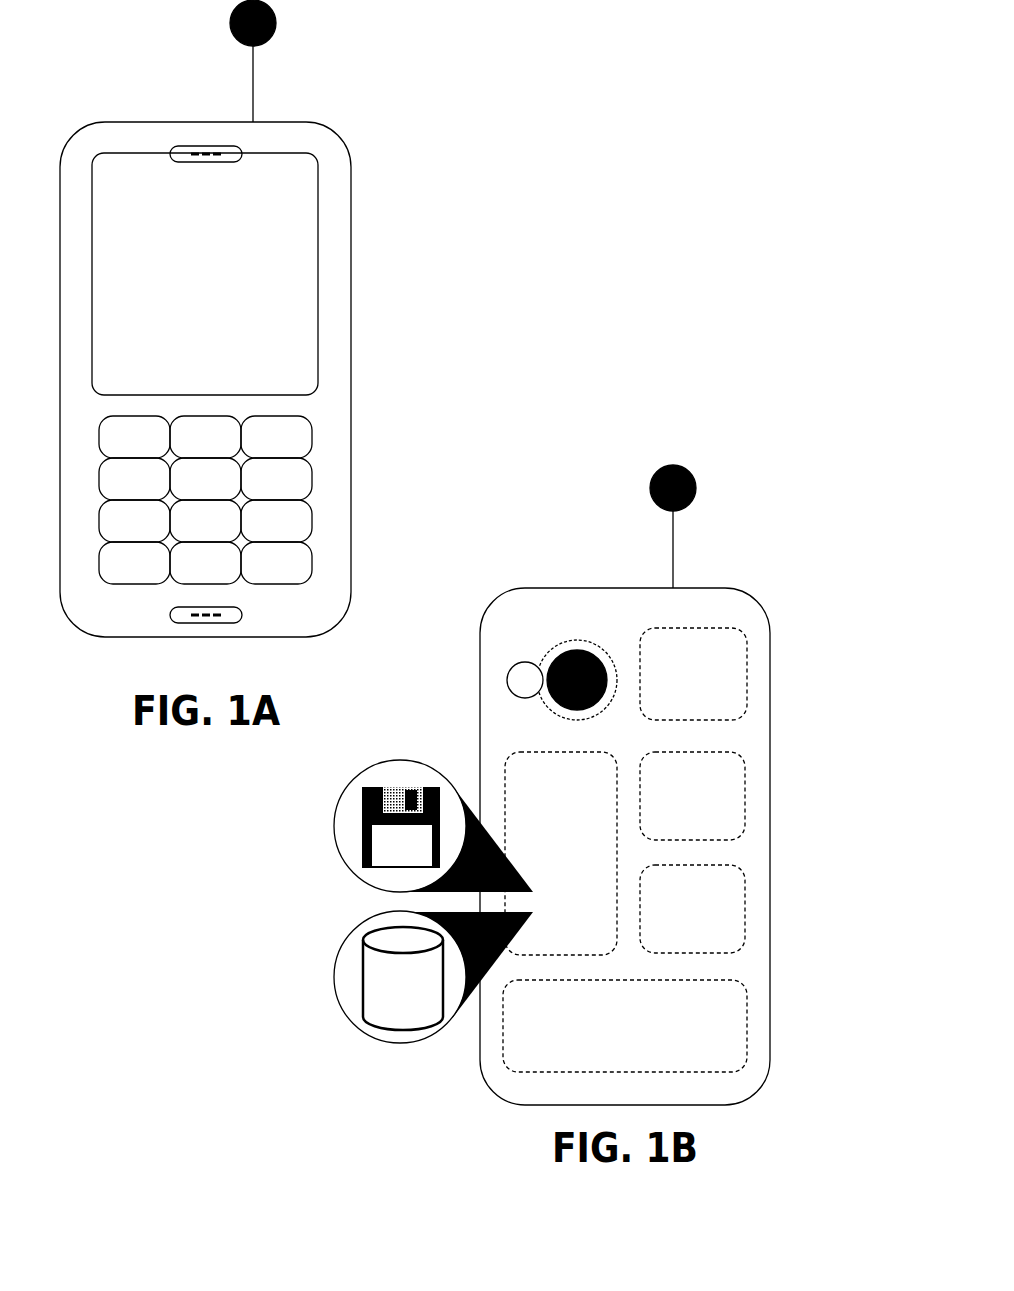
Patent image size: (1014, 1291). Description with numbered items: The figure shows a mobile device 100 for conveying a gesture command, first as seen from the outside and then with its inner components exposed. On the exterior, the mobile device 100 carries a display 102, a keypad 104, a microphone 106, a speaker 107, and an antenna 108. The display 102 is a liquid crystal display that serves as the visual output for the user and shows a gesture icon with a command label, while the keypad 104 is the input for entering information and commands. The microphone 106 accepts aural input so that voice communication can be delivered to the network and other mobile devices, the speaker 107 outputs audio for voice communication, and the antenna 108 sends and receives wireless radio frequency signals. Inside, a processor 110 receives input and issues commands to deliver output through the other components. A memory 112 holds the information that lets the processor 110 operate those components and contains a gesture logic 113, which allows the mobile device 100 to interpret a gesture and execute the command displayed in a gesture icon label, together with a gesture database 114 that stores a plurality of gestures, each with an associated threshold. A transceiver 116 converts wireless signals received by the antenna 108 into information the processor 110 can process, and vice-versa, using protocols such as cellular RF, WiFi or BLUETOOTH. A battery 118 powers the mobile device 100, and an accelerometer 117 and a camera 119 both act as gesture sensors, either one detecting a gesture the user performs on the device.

In FIG. 1A, the mobile device 100 is at (205, 357).
In FIG. 1A, the display 102 is at (269, 274).
In FIG. 1A, the keypad 104 is at (269, 500).
In FIG. 1A, the microphone 106 is at (160, 647).
In FIG. 1A, the speaker 107 is at (239, 176).
In FIG. 1A, the antenna 108 is at (301, 61).
In FIG. 1B, the antenna 108 is at (718, 526).
In FIG. 1B, the processor 110 is at (756, 778).
In FIG. 1B, the memory 112 is at (497, 836).
In FIG. 1B, the gesture logic 113 is at (362, 825).
In FIG. 1B, the gesture database 114 is at (364, 981).
In FIG. 1B, the transceiver 116 is at (756, 891).
In FIG. 1B, the accelerometer 117 is at (756, 653).
In FIG. 1B, the battery 118 is at (688, 1014).
In FIG. 1B, the camera 119 is at (515, 665).